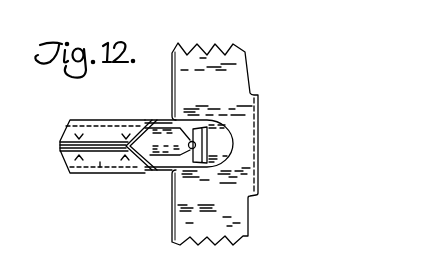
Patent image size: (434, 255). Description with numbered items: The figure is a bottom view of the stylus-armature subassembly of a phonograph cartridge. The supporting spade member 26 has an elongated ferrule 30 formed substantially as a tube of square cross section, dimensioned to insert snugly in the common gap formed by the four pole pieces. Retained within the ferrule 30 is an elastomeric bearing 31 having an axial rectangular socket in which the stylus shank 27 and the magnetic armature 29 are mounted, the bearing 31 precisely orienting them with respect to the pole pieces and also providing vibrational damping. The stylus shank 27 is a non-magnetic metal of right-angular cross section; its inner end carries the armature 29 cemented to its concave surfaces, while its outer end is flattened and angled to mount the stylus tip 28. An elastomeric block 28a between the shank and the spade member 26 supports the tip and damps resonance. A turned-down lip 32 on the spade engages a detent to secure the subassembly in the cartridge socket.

The supporting spade member 26 is at (227, 77).
The stylus shank 27 is at (167, 154).
The stylus tip 28 is at (194, 149).
The elastomeric block 28a is at (206, 148).
The magnetic armature 29 is at (97, 176).
The ferrule 30 is at (123, 129).
The elastomeric bearing 31 is at (88, 127).
The turned-down lip 32 is at (259, 183).